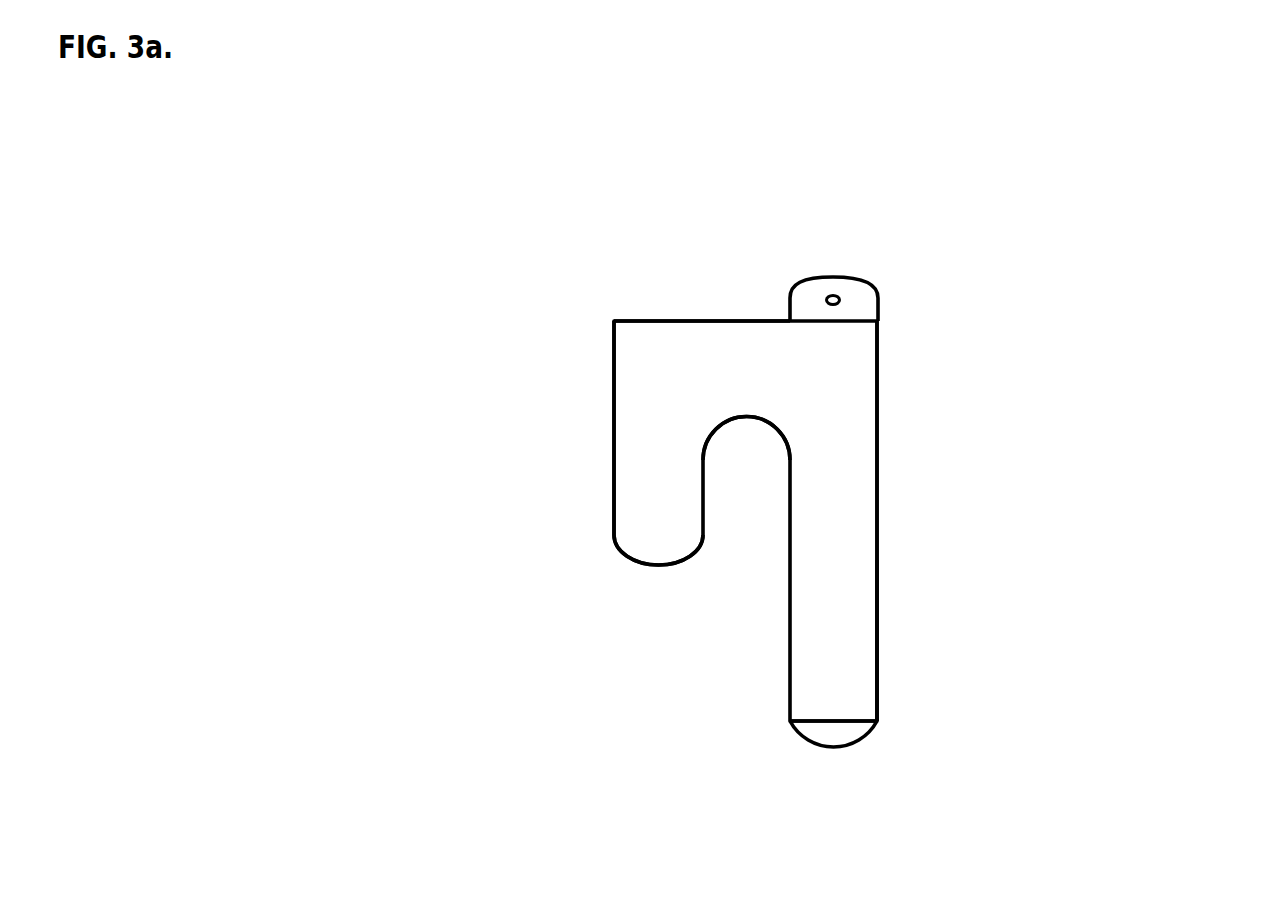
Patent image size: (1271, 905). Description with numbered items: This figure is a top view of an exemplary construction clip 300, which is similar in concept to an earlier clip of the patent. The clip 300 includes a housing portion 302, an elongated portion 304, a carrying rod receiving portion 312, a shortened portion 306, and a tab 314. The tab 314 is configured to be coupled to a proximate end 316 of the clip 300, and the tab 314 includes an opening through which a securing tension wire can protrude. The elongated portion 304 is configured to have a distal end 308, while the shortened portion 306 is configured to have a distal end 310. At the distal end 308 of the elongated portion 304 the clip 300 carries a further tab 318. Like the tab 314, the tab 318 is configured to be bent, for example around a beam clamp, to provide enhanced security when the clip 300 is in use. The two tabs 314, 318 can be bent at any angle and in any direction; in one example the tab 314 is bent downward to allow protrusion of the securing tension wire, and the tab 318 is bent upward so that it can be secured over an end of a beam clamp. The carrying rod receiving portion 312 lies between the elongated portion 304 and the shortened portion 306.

The construction clip 300 is at (1127, 209).
The housing portion 302 is at (878, 488).
The elongated portion 304 is at (878, 635).
The shortened portion 306 is at (613, 475).
The distal end of elongated portion 308 is at (832, 748).
The distal end of shortened portion 310 is at (657, 567).
The carrying rod receiving portion 312 is at (742, 422).
The tab 314 is at (879, 300).
The proximate end 316 is at (747, 322).
The tab 318 is at (845, 731).